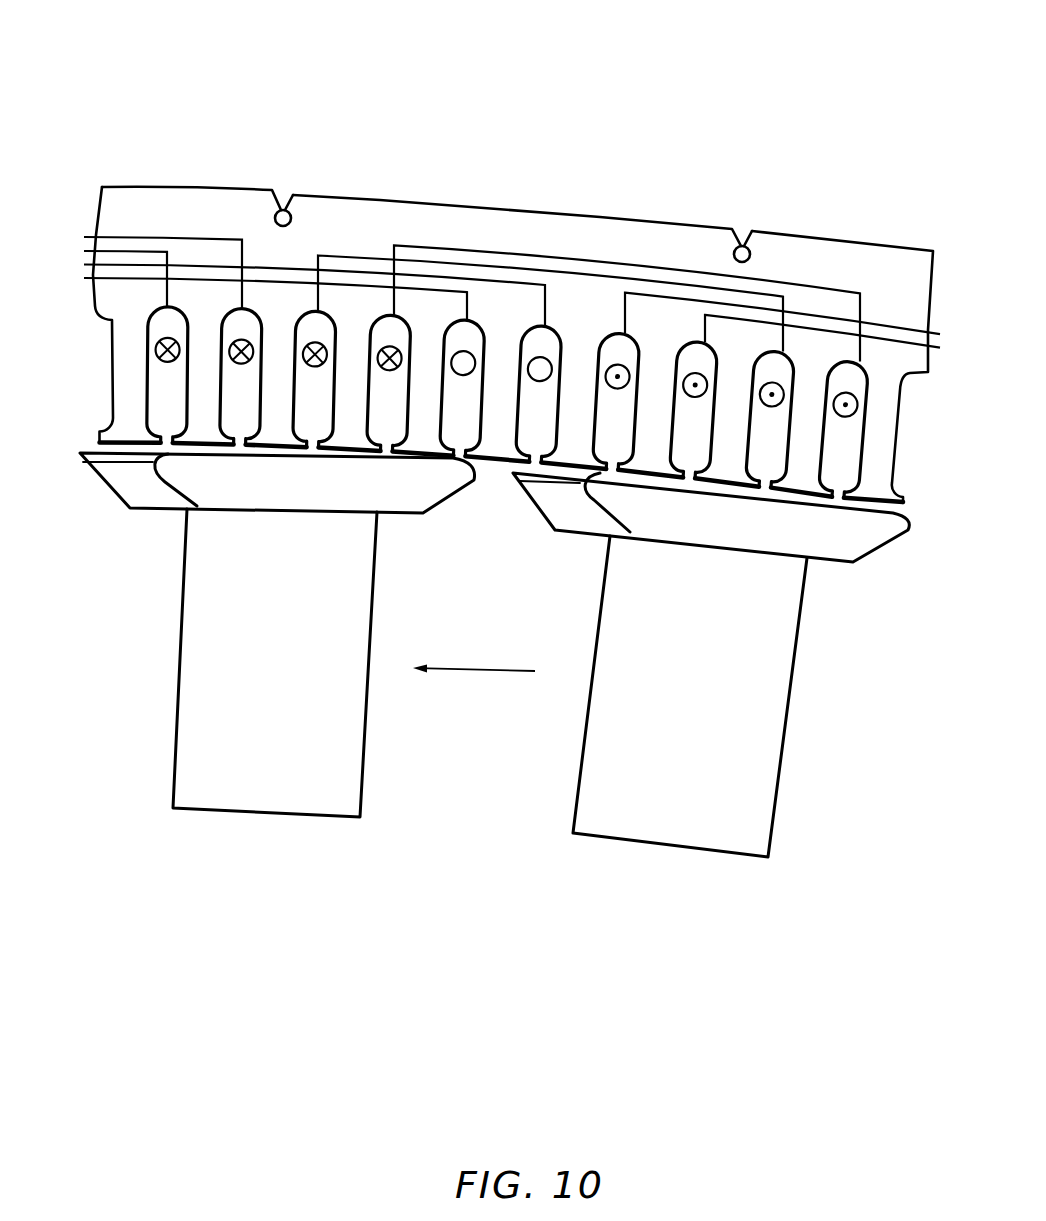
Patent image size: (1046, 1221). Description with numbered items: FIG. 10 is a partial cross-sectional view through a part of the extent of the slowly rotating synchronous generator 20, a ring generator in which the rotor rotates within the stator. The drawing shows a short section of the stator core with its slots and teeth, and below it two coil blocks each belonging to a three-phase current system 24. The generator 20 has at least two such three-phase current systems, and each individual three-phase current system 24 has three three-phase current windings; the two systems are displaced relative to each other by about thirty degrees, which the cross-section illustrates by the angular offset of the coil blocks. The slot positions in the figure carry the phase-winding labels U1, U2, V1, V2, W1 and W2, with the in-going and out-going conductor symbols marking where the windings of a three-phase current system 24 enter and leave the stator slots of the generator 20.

The synchronous generator 20 is at (480, 136).
The three-phase current system 24 is at (138, 613).
The U-phase slot 1 U1 is at (393, 389).
The U-phase slot 2 U2 is at (469, 393).
The V-phase slot 1 V1 is at (544, 400).
The V-phase slot 2 V2 is at (617, 407).
The W-phase slot 1 W1 is at (462, 388).
The W-phase slot 2 W2 is at (538, 394).